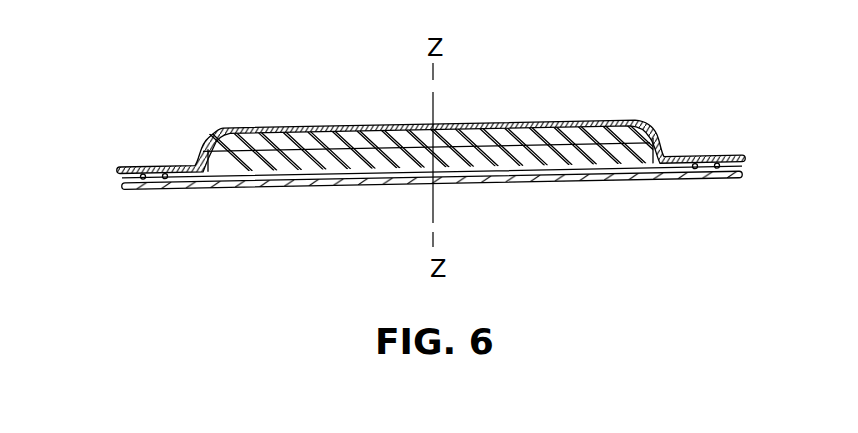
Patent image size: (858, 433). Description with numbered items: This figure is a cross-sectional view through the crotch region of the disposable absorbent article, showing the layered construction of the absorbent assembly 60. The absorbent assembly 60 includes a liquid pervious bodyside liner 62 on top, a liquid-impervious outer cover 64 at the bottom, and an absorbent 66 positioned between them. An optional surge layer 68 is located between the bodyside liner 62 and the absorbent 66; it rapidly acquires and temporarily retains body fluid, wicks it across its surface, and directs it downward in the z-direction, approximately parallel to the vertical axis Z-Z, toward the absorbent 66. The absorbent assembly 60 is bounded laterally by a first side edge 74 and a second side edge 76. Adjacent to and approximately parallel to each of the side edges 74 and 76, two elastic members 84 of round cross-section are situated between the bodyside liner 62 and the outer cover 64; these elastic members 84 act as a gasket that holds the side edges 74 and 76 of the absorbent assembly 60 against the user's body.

The absorbent assembly 60 is at (694, 57).
The bodyside liner 62 is at (597, 120).
The outer cover 64 is at (610, 178).
The absorbent 66 is at (644, 150).
The surge layer 68 is at (628, 133).
The first side edge 74 is at (122, 188).
The second side edge 76 is at (744, 177).
The elastic member 84 is at (145, 181).